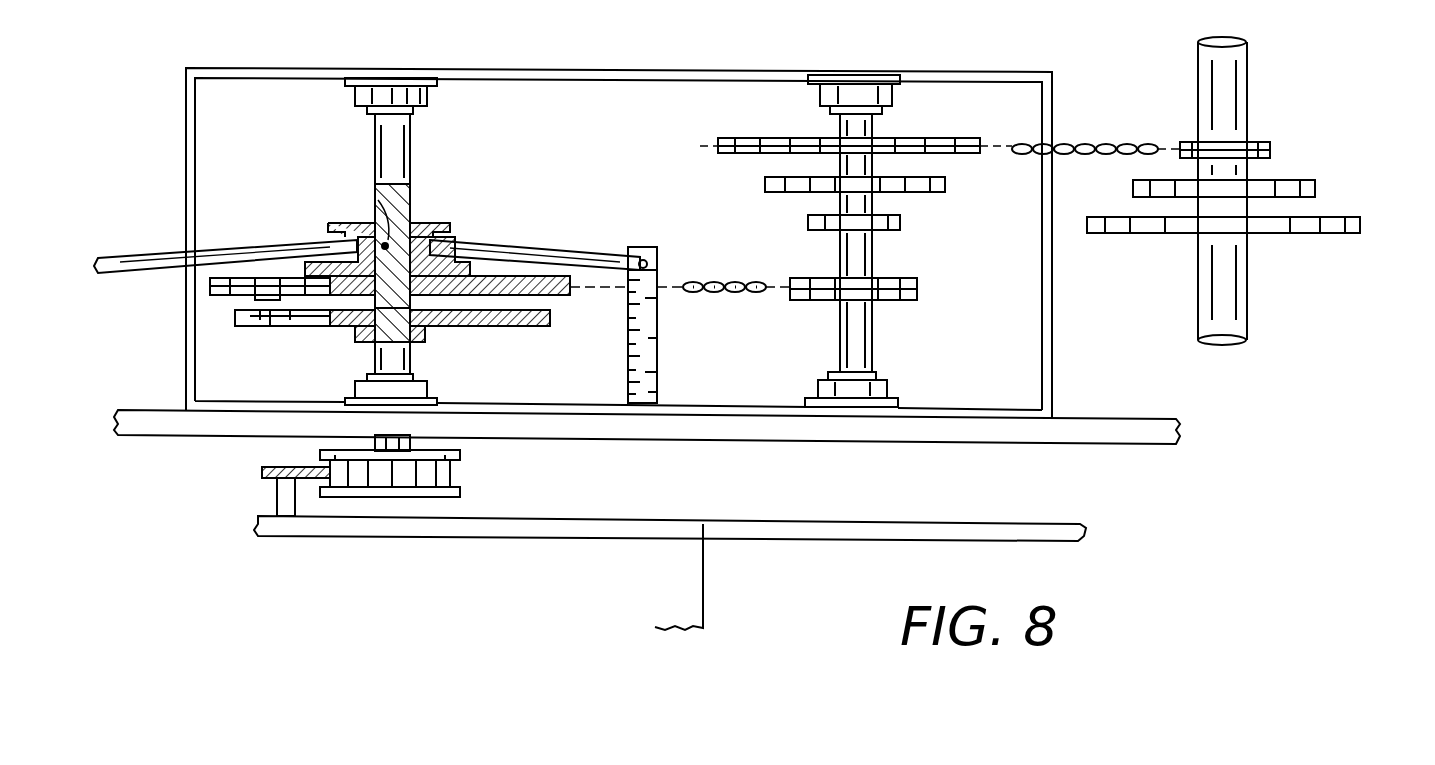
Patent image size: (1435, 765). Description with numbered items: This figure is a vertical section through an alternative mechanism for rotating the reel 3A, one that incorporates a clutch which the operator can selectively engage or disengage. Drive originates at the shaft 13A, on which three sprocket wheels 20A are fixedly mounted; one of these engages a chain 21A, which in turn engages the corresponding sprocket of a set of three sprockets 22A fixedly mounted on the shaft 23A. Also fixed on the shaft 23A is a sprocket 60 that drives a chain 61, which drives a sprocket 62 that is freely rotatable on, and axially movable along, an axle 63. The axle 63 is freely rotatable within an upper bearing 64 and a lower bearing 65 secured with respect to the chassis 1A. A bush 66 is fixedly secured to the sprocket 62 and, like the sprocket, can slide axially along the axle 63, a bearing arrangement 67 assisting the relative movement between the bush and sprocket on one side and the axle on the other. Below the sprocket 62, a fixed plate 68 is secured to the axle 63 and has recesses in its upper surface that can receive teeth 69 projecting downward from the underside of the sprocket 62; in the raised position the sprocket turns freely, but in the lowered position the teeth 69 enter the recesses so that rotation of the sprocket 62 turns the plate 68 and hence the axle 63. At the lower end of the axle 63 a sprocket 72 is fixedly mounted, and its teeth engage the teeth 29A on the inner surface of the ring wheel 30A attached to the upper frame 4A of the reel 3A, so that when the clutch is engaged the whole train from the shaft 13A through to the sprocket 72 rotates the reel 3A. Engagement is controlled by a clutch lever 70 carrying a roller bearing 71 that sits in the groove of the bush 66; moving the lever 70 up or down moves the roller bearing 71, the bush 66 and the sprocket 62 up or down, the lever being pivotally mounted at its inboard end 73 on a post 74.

The chassis 1A is at (785, 438).
The reel 3A is at (706, 572).
The upper frame 4A is at (587, 517).
The shaft 13A is at (1238, 103).
The sprocket wheels 20A is at (1342, 218).
The chain 21A is at (1098, 145).
The sprockets 22A is at (818, 220).
The shaft 23A is at (878, 132).
The teeth 29A is at (325, 468).
The ring wheel 30A is at (265, 478).
The sprocket 60 is at (905, 278).
The chain 61 is at (738, 280).
The sprocket 62 is at (522, 250).
The axle 63 is at (405, 130).
The upper bearing 64 is at (358, 96).
The lower bearing 65 is at (358, 384).
The bush 66 is at (330, 226).
The bearing arrangement 67 is at (410, 236).
The fixed plate 68 is at (466, 328).
The teeth 69 is at (526, 304).
The clutch lever 70 is at (162, 256).
The roller bearing 71 is at (382, 225).
The sprocket 72 is at (460, 468).
The inboard end 73 is at (657, 250).
The post 74 is at (650, 326).